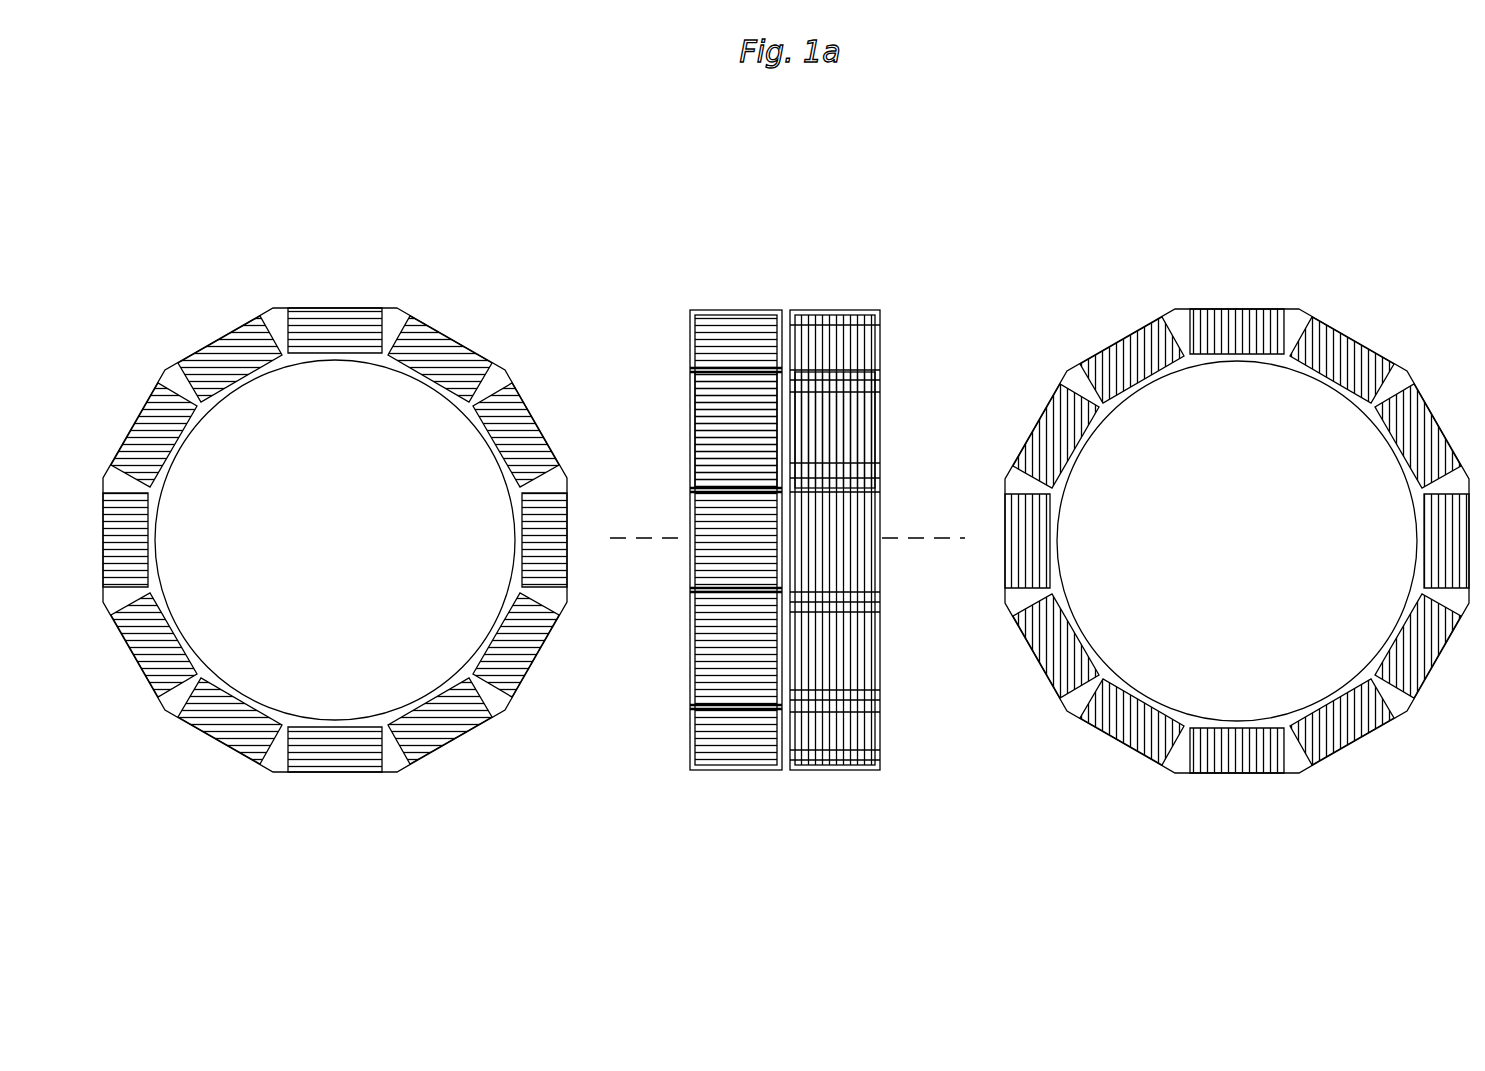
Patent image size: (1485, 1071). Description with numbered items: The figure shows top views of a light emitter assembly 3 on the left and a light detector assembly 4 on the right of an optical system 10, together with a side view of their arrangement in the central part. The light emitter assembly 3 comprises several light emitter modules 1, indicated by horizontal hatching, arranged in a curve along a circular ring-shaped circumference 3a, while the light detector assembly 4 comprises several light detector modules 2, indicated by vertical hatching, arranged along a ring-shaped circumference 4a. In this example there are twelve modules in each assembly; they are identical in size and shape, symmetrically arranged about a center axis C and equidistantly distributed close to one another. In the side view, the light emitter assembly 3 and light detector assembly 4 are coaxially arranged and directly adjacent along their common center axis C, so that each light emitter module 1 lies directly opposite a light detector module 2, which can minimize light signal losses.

The optical system 10 is at (913, 226).
The light emitter module 1 is at (700, 413).
The light detector module 2 is at (868, 414).
The light emitter assembly 3 is at (218, 292).
The light detector assembly 4 is at (1050, 730).
The ring-shaped circumference 3a is at (205, 658).
The ring-shaped circumference 4a is at (1365, 418).
The center axis C is at (905, 535).